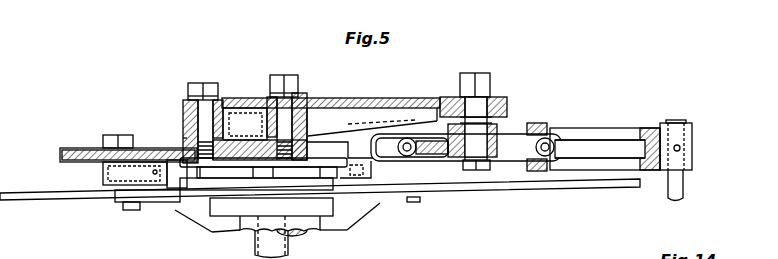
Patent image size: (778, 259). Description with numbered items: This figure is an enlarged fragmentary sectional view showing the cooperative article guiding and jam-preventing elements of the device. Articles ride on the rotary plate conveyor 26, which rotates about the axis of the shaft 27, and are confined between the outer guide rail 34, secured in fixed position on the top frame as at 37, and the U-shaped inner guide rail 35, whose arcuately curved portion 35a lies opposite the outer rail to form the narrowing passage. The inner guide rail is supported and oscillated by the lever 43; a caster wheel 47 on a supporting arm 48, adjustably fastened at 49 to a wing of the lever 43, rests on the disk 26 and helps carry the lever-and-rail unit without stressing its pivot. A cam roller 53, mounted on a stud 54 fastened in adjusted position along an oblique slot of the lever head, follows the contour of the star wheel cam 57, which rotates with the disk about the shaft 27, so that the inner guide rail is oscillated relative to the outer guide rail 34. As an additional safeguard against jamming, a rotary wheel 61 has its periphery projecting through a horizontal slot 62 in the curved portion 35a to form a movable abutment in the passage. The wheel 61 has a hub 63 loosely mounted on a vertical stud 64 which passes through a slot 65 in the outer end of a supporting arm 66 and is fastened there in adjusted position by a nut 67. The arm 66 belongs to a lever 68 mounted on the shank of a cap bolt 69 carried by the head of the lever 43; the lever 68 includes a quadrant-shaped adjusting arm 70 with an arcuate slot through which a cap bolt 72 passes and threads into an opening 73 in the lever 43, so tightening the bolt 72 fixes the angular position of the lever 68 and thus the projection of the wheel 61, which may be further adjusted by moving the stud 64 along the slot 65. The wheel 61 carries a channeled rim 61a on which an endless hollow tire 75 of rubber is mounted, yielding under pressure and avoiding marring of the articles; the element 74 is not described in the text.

The rotary plate conveyor 26 is at (533, 188).
The shaft 27 is at (290, 240).
The outer guide rail 34 is at (604, 128).
The inner guide rail 35 is at (402, 190).
The arcuately curved portion 35a is at (550, 124).
The fastening point 37 is at (690, 176).
The lever 43 is at (92, 148).
The caster wheel 47 is at (176, 188).
The supporting arm 48 is at (128, 184).
The fastening 49 is at (118, 135).
The cam roller 53 is at (214, 198).
The stud 54 is at (245, 124).
The cam 57 is at (336, 186).
The rotary wheel 61 is at (498, 130).
The channeled rim 61a is at (425, 160).
The horizontal slot 62 is at (556, 140).
The hub 63 is at (444, 108).
The vertical stud 64 is at (490, 170).
The slot 65 is at (462, 100).
The supporting arm 66 is at (400, 97).
The nut 67 is at (490, 82).
The lever 68 is at (300, 97).
The cap bolt 69 is at (272, 100).
The adjusting arm 70 is at (230, 100).
The cap bolt 72 is at (190, 110).
The opening 73 is at (190, 140).
The lever 74 is at (360, 121).
The tire 75 is at (560, 146).